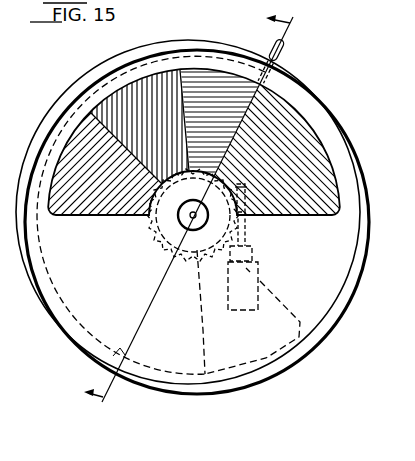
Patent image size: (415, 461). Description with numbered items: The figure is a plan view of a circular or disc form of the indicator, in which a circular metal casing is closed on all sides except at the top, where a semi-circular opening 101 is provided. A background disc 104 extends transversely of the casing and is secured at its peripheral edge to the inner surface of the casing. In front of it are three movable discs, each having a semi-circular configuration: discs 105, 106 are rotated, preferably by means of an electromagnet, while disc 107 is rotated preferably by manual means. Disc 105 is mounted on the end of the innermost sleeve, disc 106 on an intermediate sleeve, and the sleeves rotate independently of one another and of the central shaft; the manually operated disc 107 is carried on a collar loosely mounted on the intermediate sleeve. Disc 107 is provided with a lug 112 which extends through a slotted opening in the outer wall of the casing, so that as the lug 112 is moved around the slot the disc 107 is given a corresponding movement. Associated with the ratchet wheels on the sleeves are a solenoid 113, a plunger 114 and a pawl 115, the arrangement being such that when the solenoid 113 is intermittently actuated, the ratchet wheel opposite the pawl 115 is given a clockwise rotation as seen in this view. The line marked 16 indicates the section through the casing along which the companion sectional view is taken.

The section line 16- 16 is at (288, 28).
The semi-circular opening 101 is at (304, 118).
The background disc 104 is at (338, 120).
The disc 105 is at (88, 209).
The disc 106 is at (134, 94).
The disc 107 is at (207, 80).
The lug 112 is at (284, 52).
The solenoid 113 is at (259, 275).
The plunger 114 is at (252, 251).
The pawl 115 is at (262, 219).